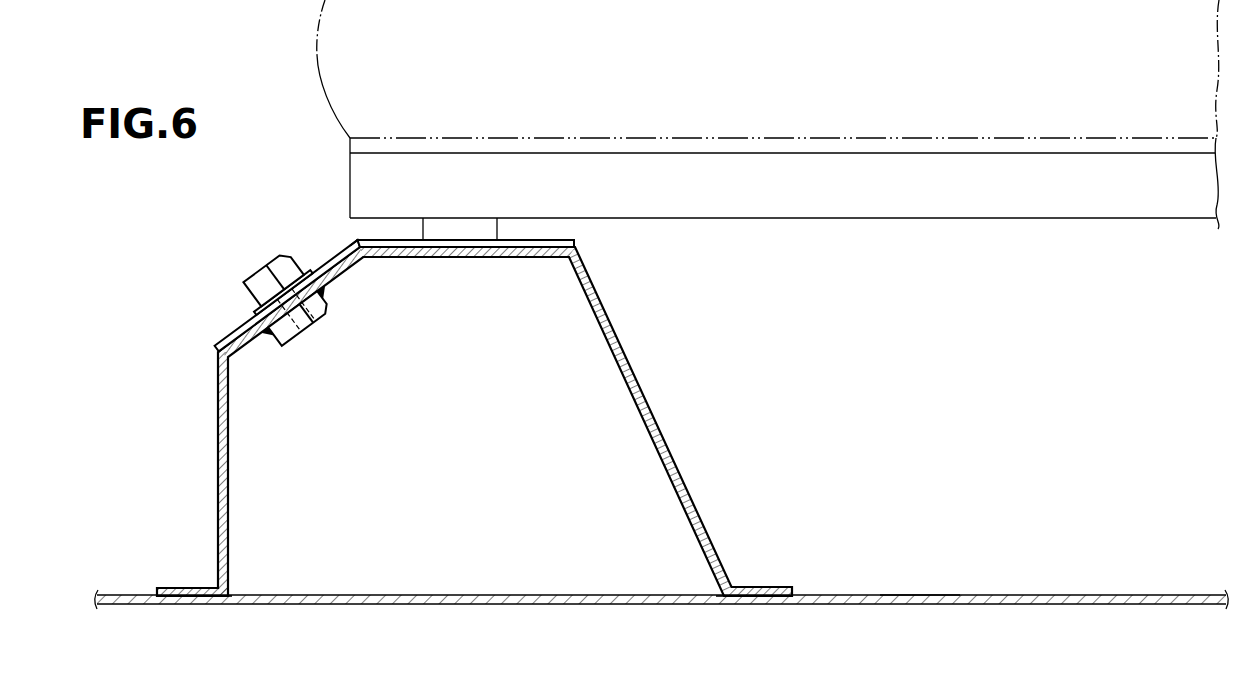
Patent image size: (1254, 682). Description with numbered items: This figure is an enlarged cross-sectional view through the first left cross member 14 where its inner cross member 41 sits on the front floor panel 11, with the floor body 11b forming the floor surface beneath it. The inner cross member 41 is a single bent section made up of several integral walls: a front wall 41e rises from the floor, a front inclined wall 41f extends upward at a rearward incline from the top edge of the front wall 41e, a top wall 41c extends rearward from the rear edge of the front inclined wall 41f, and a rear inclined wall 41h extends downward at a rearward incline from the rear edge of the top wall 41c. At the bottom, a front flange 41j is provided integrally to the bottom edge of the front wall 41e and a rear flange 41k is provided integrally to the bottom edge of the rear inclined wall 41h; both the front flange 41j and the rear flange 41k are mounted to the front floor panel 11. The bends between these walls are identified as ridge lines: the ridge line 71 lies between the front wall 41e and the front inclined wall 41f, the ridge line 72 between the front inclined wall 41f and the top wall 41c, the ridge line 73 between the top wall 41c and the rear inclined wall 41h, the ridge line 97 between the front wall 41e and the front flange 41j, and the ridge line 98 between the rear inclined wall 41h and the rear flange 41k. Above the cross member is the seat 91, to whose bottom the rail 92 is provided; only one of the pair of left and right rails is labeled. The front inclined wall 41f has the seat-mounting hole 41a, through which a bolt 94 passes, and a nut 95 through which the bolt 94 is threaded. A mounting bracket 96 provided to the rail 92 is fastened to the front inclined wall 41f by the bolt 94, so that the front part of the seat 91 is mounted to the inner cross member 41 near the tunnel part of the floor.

The front floor panel 11 is at (662, 543).
The floor body 11b is at (920, 594).
The first left cross member 14 is at (455, 404).
The inner cross member 41 is at (455, 462).
The seat-mounting hole 41a is at (280, 287).
The top wall 41c is at (455, 252).
The front wall 41e is at (218, 470).
The front inclined wall 41f is at (246, 343).
The rear inclined wall 41h is at (651, 413).
The front flange 41j is at (178, 586).
The rear flange 41k is at (773, 585).
The ridge line 71 is at (213, 351).
The ridge line 72 is at (355, 243).
The ridge line 73 is at (576, 244).
The seat 91 is at (318, 52).
The rail 92 is at (780, 170).
The bolt 94 is at (265, 272).
The nut 95 is at (332, 312).
The mounting bracket 96 is at (234, 336).
The ridge line 97 is at (229, 597).
The ridge line 98 is at (722, 596).